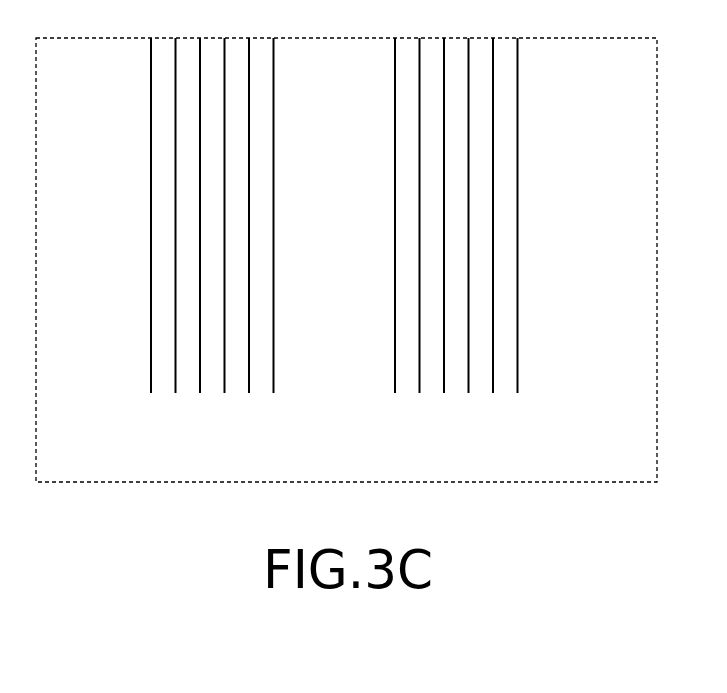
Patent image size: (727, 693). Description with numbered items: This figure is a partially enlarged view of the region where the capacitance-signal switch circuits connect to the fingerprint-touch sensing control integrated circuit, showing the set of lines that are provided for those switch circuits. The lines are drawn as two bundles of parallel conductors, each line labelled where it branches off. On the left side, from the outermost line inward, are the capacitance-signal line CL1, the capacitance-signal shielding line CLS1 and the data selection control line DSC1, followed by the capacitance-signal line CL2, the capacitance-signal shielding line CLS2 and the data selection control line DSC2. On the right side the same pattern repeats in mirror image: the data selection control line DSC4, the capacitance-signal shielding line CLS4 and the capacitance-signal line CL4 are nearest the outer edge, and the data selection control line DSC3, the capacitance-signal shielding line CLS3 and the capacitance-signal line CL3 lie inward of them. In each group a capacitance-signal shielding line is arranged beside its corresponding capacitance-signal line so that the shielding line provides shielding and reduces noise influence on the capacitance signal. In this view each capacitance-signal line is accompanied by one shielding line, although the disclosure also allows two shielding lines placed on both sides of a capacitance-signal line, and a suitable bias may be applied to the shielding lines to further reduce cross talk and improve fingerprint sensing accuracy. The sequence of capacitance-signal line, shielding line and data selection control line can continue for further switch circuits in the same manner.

The capacitance-signal line CL1 is at (151, 118).
The capacitance-signal shielding line CLS1 is at (176, 136).
The data selection control line DSC1 is at (200, 157).
The capacitance-signal line CL2 is at (224, 219).
The capacitance-signal shielding line CLS2 is at (249, 243).
The data selection control line DSC2 is at (274, 271).
The capacitance-signal line CL3 is at (395, 271).
The capacitance-signal shielding line CLS3 is at (420, 243).
The data selection control line DSC3 is at (444, 219).
The capacitance-signal line CL4 is at (468, 157).
The capacitance-signal shielding line CLS4 is at (493, 135).
The data selection control line DSC4 is at (518, 118).